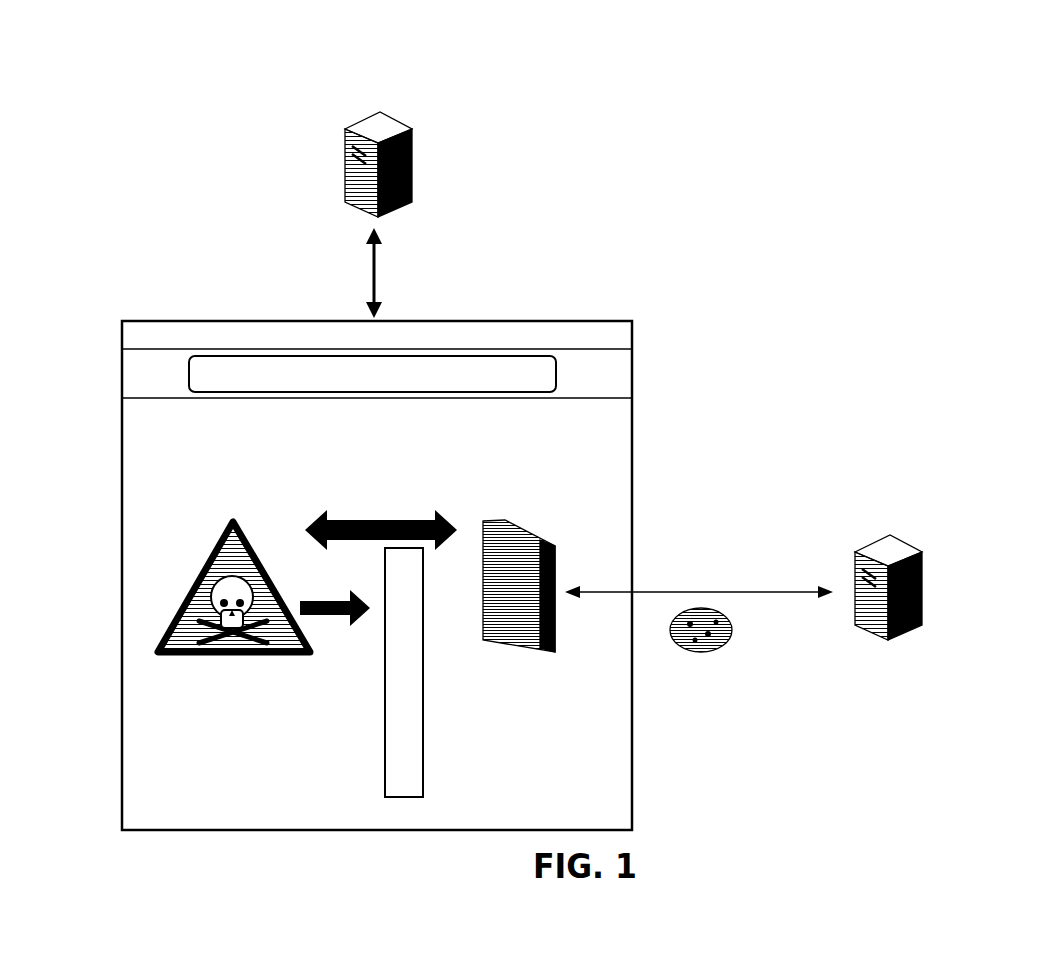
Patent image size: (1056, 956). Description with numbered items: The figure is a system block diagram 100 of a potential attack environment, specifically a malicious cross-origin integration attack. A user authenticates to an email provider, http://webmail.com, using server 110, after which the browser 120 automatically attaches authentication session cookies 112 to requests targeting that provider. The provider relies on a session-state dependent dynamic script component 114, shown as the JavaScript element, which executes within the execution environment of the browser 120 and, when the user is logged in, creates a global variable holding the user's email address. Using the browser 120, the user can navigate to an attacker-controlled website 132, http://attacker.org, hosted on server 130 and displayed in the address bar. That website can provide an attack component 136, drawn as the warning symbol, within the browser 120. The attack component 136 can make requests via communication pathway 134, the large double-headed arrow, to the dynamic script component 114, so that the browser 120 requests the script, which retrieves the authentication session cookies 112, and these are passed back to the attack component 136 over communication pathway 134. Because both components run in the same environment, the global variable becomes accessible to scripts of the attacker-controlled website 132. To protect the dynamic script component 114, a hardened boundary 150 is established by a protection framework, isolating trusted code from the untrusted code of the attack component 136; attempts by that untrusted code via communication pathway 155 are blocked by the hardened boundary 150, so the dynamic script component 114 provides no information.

The system block diagram 100 is at (893, 76).
The server 110 is at (889, 560).
The authentication session cookies 112 is at (724, 661).
The dynamic script component 114 is at (517, 591).
The browser 120 is at (392, 542).
The server 130 is at (376, 138).
The attacker-controlled website 132 is at (372, 406).
The communication pathway 134 is at (381, 504).
The attack component 136 is at (234, 567).
The hardened boundary 150 is at (434, 672).
The communication pathway 155 is at (337, 635).